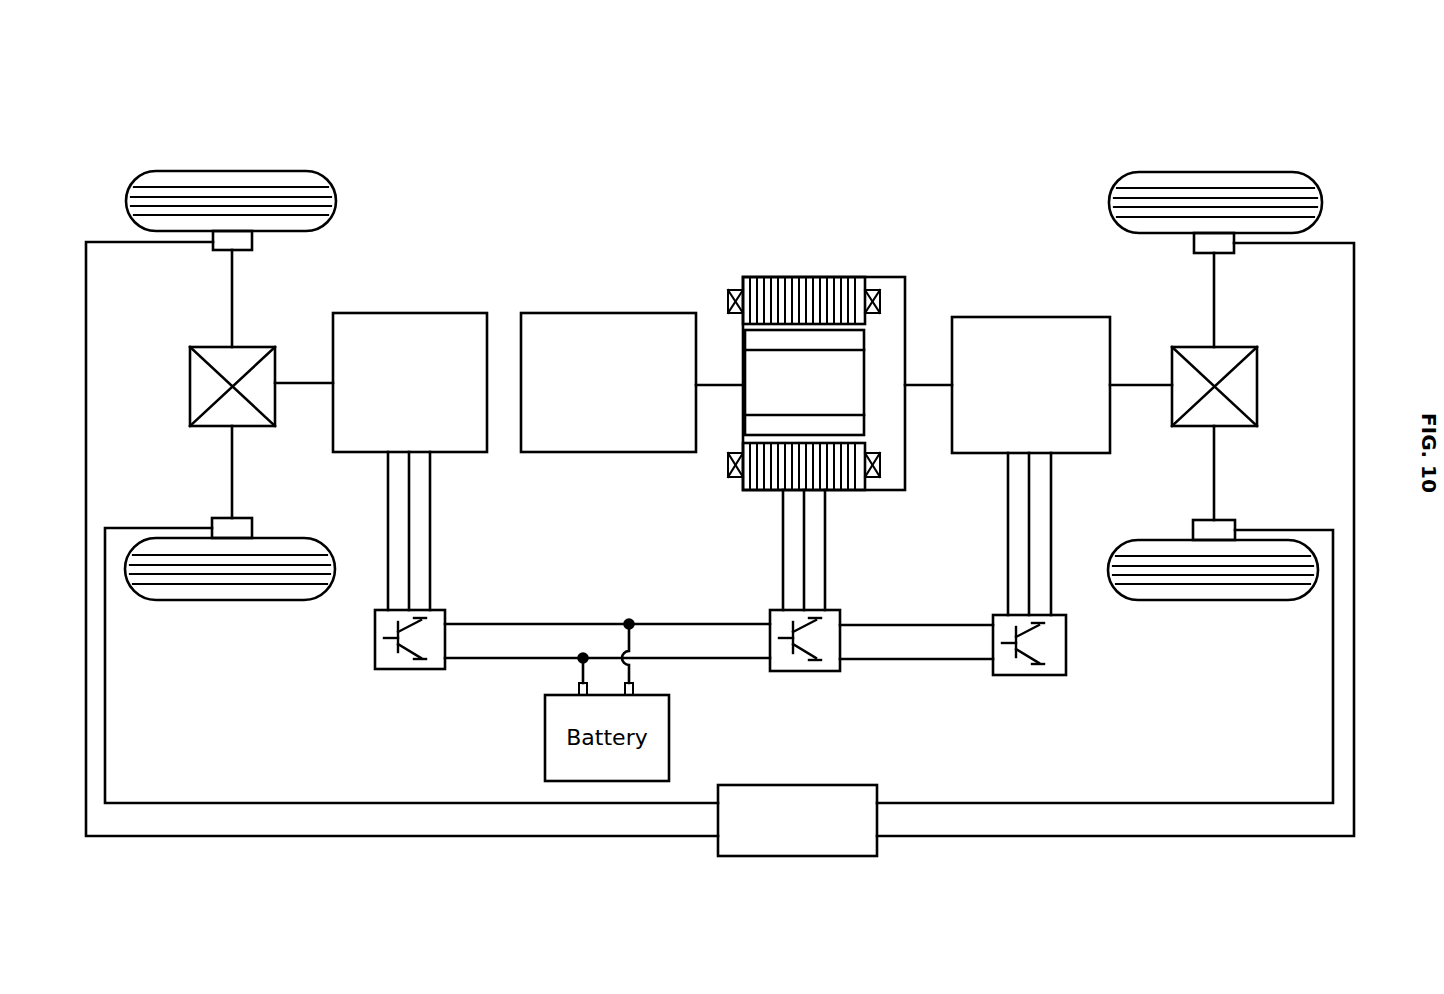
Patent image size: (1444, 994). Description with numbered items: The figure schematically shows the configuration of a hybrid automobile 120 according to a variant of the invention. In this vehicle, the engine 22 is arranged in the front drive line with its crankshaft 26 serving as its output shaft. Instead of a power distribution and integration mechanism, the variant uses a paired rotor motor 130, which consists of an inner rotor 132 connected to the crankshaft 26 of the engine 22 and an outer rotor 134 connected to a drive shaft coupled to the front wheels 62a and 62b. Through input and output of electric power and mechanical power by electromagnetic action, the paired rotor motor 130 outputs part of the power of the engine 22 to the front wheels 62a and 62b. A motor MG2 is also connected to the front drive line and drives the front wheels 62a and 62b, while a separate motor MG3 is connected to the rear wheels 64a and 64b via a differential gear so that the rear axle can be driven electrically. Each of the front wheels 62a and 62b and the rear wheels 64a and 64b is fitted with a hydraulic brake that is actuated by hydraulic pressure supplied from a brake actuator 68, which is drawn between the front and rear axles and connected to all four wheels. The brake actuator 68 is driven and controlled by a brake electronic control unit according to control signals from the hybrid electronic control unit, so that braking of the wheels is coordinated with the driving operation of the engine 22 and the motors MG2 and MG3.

The hybrid automobile 120 is at (906, 66).
The rear wheel 64a is at (232, 170).
The rear wheel 64b is at (232, 600).
The front wheel 62a is at (1214, 172).
The front wheel 62b is at (1212, 600).
The motor MG3 is at (410, 313).
The engine 22 is at (610, 313).
The crankshaft 26 is at (707, 392).
The paired rotor motor 130 is at (799, 346).
The inner rotor 132 is at (743, 362).
The outer rotor 134 is at (853, 277).
The motor MG2 is at (1033, 317).
The brake actuator 68 is at (833, 785).